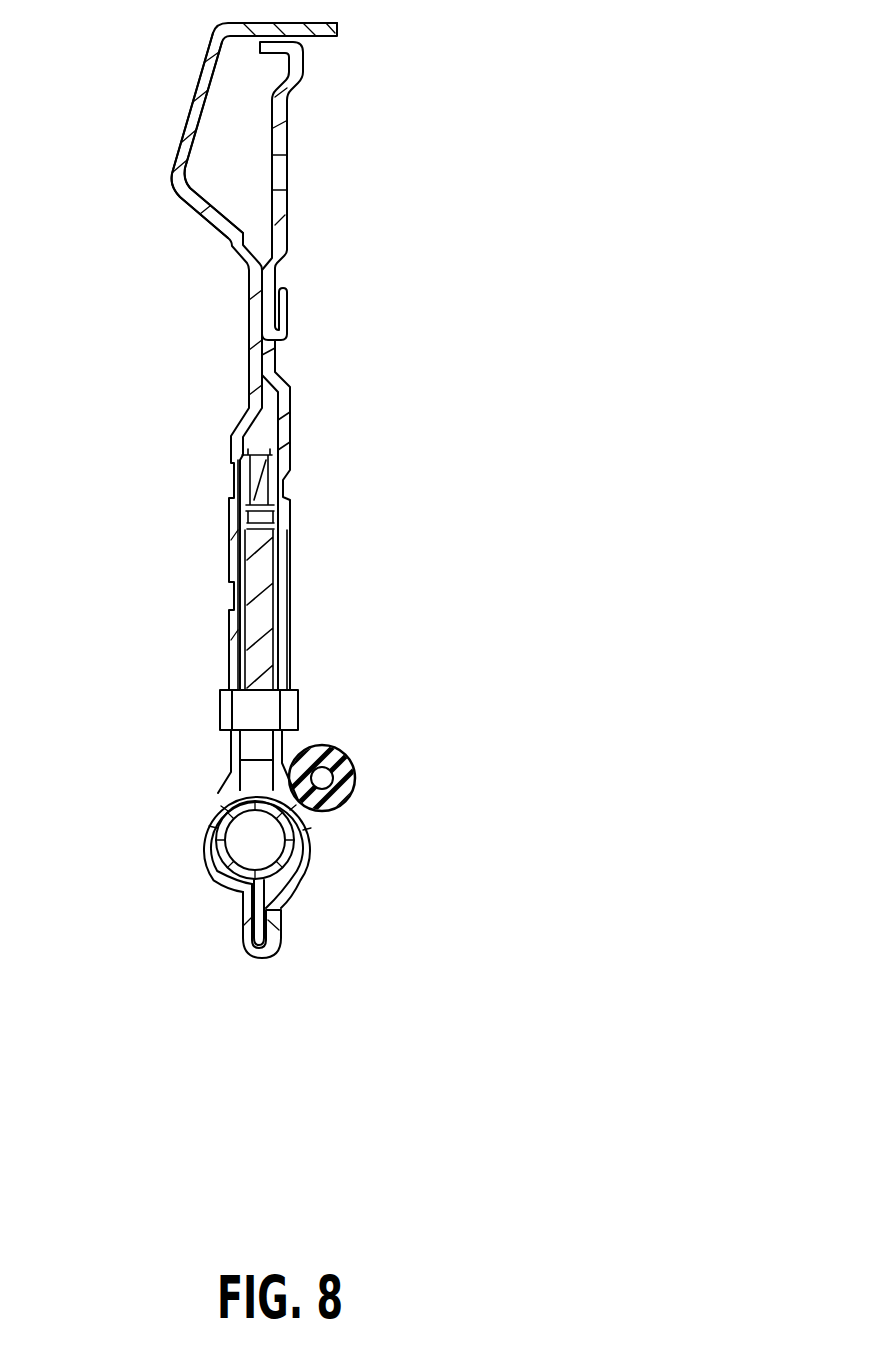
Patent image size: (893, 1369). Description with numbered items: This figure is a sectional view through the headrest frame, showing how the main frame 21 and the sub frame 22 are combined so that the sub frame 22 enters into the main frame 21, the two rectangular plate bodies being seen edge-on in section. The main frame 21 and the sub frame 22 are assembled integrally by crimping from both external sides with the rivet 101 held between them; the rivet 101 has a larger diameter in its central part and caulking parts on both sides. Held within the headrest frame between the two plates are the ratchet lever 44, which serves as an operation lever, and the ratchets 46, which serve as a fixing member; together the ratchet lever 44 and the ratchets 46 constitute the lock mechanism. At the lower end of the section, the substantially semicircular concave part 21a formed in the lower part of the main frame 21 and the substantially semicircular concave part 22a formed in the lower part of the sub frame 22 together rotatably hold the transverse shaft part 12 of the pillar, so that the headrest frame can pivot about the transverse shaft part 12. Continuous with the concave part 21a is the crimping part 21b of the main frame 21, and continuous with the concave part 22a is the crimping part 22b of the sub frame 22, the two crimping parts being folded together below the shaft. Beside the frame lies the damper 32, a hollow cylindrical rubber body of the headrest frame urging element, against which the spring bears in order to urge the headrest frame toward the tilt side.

The transverse shaft part 12 is at (283, 840).
The main frame 21 is at (192, 205).
The substantially semicircular concave part 21a is at (203, 838).
The crimping part 21b is at (262, 960).
The sub frame 22 is at (290, 190).
The substantially semicircular concave part 22a is at (303, 857).
The crimping part 22b is at (283, 903).
The damper 32 is at (347, 757).
The ratchet lever 44 is at (263, 490).
The ratchets 46 is at (262, 603).
The rivet 101 is at (297, 700).